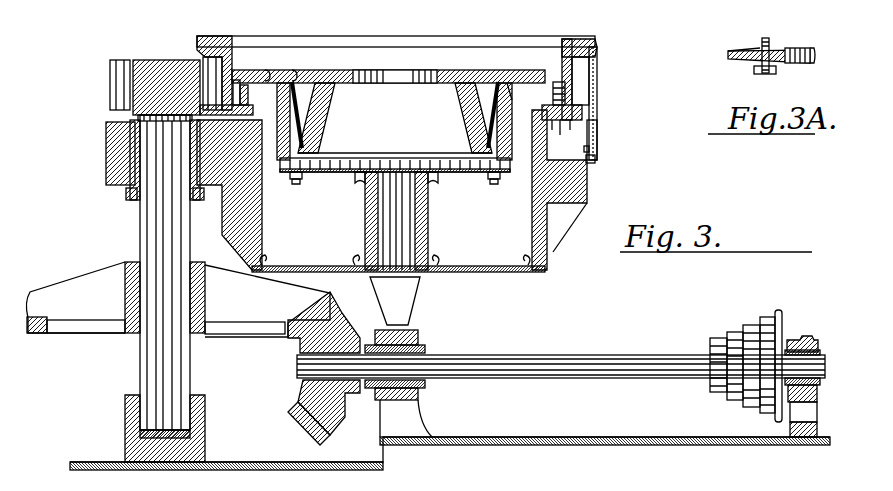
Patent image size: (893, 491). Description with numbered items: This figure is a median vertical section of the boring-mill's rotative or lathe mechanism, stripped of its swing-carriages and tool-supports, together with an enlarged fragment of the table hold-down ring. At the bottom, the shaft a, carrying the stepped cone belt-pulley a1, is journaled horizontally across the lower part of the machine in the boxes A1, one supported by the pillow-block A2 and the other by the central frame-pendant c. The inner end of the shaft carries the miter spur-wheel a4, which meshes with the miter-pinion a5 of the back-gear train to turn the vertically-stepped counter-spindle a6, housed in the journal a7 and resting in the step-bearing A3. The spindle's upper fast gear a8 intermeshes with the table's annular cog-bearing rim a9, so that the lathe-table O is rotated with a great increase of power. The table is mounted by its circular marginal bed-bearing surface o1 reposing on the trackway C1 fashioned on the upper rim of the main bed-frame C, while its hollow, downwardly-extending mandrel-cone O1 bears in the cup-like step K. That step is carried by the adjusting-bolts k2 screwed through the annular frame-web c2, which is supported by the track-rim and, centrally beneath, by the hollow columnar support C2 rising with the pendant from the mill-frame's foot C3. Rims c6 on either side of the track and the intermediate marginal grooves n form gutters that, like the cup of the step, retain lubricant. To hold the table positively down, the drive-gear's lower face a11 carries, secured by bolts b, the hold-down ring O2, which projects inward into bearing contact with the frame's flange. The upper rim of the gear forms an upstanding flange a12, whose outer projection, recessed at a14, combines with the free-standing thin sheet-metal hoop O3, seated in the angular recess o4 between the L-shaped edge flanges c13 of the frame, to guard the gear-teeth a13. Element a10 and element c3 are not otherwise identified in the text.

In FIG. 3, the shaft a is at (561, 366).
In FIG. 3, the cone belt-pulley a1 is at (746, 366).
In FIG. 3, the miter spur-wheel a4 is at (303, 404).
In FIG. 3, the miter-pinion a5 is at (178, 299).
In FIG. 3, the counter-spindle a6 is at (165, 272).
In FIG. 3, the journal a7 is at (106, 150).
In FIG. 3, the fast gear a8 is at (110, 83).
In FIG. 3, the cog-bearing rim a9 is at (232, 69).
In FIG. 3, the clamp block a10 is at (566, 110).
In FIG. 3, the lower face of drive-gear a11 is at (595, 110).
In FIG. 3, the flange a12 is at (214, 48).
In FIG. 3, the gear-teeth a13 is at (597, 63).
In FIG. 3, the recess a14 is at (203, 60).
In FIG. 3, the boxes A1 is at (421, 350).
In FIG. 3, the pillow-block A2 is at (803, 419).
In FIG. 3, the step-bearing A3 is at (125, 421).
In FIG. 3, the bolts b is at (571, 125).
In FIG. 3, the central frame-pendant c is at (401, 357).
In FIG. 3, the annular frame-web c2 is at (346, 160).
In FIG. 3, the housing clips c3 is at (306, 267).
In FIG. 3, the rims c6 is at (267, 69).
In FIG. 3, the L-shaped edge flanges c13 is at (596, 164).
In FIG. 3, the main bed-frame C is at (534, 189).
In FIG. 3, the trackway C1 is at (395, 121).
In FIG. 3, the hollow columnar support C2 is at (396, 221).
In FIG. 3, the mill-frame's foot C3 is at (450, 368).
In FIG. 3, the adjusting-bolts k2 is at (297, 184).
In FIG. 3A, the adjusting-bolts k2 is at (770, 73).
In FIG. 3, the cup-like step K is at (272, 156).
In FIG. 3, the marginal grooves n is at (511, 84).
In FIG. 3, the marginal bed-bearing surface o1 is at (551, 135).
In FIG. 3, the lathe-table O is at (412, 67).
In FIG. 3, the mandrel-cone O1 is at (314, 80).
In FIG. 3, the hold-down ring O2 is at (561, 136).
In FIG. 3A, the hold-down ring O2 is at (768, 50).
In FIG. 3, the sheet-metal hoop O3 is at (597, 135).
In FIG. 3A, the sheet-metal hoop O3 is at (755, 52).
In FIG. 3, the angular recess o4 is at (590, 154).